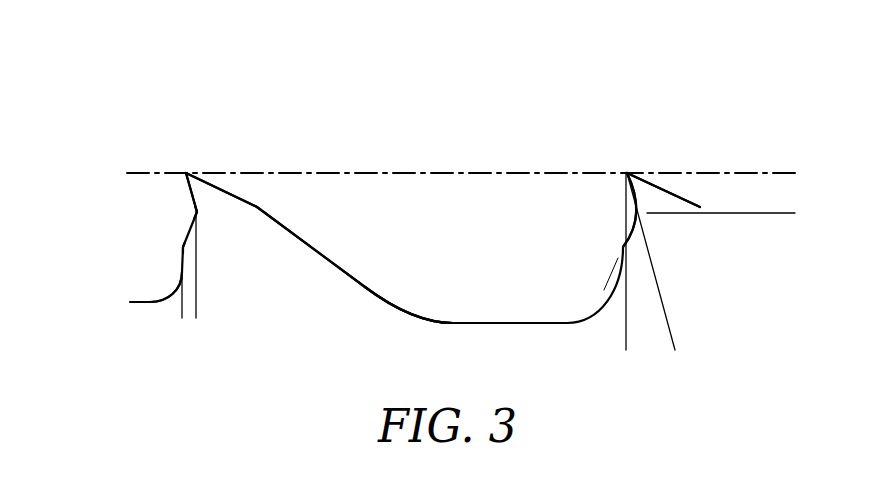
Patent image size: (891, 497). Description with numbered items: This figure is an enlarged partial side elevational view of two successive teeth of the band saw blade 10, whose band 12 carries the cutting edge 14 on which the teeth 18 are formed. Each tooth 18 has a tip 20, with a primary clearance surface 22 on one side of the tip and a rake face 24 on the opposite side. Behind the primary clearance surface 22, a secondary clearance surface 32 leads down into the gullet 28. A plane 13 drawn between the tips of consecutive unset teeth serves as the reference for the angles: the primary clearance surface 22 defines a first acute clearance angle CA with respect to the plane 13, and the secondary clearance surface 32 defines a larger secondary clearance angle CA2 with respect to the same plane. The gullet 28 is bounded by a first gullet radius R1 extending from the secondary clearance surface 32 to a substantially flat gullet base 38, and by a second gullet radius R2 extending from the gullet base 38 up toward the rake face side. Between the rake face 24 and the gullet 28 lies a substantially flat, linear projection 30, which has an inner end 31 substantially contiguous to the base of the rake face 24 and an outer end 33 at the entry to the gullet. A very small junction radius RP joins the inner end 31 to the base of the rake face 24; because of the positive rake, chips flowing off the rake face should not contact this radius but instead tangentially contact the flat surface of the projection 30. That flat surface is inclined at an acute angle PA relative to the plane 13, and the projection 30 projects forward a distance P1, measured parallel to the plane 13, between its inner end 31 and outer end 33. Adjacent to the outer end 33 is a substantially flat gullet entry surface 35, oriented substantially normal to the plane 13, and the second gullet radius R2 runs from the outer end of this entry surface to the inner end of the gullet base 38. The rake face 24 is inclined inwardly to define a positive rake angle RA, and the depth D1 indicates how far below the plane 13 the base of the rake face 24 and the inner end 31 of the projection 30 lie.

The saw blade 10 is at (764, 83).
The band 12 is at (320, 316).
The plane 13 is at (472, 172).
The cutting edge 14 is at (621, 139).
The tooth 18 is at (689, 320).
The tip 20 is at (186, 173).
The primary clearance surface 22 is at (225, 190).
The rake face 24 is at (188, 193).
The gullet 28 is at (483, 256).
The linear projection 30 is at (188, 230).
The inner end 31 is at (198, 212).
The secondary clearance surface 32 is at (347, 268).
The outer end 33 is at (184, 247).
The gullet entry surface 35 is at (181, 261).
The gullet base 38 is at (132, 302).
The junction radius RP is at (192, 211).
The projection distance P1 is at (140, 310).
The first gullet radius R1 is at (404, 306).
The second gullet radius R2 is at (160, 292).
The primary clearance angle CA is at (707, 177).
The secondary clearance angle CA2 is at (338, 176).
The projection angle PA is at (607, 273).
The rake angle RA is at (666, 318).
The depth D1 is at (768, 260).